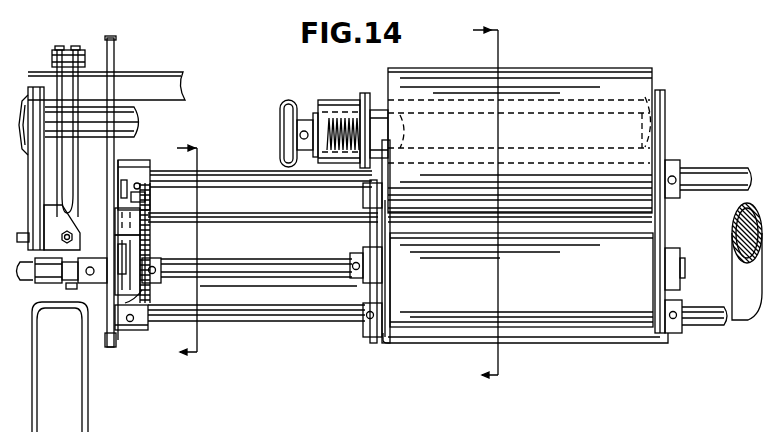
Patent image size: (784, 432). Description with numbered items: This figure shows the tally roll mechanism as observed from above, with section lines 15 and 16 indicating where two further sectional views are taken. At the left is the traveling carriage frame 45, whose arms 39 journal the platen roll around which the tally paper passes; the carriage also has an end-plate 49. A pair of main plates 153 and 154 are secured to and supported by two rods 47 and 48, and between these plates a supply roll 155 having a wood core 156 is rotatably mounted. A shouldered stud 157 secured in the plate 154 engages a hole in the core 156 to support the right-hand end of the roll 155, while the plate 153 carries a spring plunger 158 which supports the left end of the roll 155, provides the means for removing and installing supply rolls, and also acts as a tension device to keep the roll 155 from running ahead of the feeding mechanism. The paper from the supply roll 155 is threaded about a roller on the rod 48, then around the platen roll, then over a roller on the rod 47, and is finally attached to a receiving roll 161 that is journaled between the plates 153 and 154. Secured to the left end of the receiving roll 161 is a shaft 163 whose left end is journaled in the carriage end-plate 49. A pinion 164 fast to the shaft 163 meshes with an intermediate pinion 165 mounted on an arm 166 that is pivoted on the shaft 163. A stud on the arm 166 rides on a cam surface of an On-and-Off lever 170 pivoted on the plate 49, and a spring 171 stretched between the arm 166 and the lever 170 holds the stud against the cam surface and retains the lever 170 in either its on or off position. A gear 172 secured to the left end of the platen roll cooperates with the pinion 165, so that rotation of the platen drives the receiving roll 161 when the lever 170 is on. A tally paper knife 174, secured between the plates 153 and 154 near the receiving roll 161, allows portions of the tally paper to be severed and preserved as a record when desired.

The section line 15- 15 is at (177, 253).
The section line 16- 16 is at (476, 202).
The arms 39 is at (72, 289).
The traveling carriage frame 45 is at (78, 415).
The rod 47 is at (297, 317).
The rod 48 is at (708, 177).
The carriage end-plate 49 is at (108, 143).
The main plate 153 is at (377, 230).
The main plate 154 is at (663, 110).
The supply roll 155 is at (562, 85).
The wood core 156 is at (610, 98).
The shouldered stud 157 is at (645, 96).
The spring plunger 158 is at (380, 112).
The receiving roll 161 is at (660, 253).
The shaft 163 is at (252, 268).
The pinion 164 is at (148, 288).
The intermediate pinion 165 is at (147, 228).
The arm 166 is at (150, 253).
The On-and-Off lever 170 is at (110, 180).
The spring 171 is at (140, 185).
The gear 172 is at (152, 303).
The tally paper knife 174 is at (595, 338).